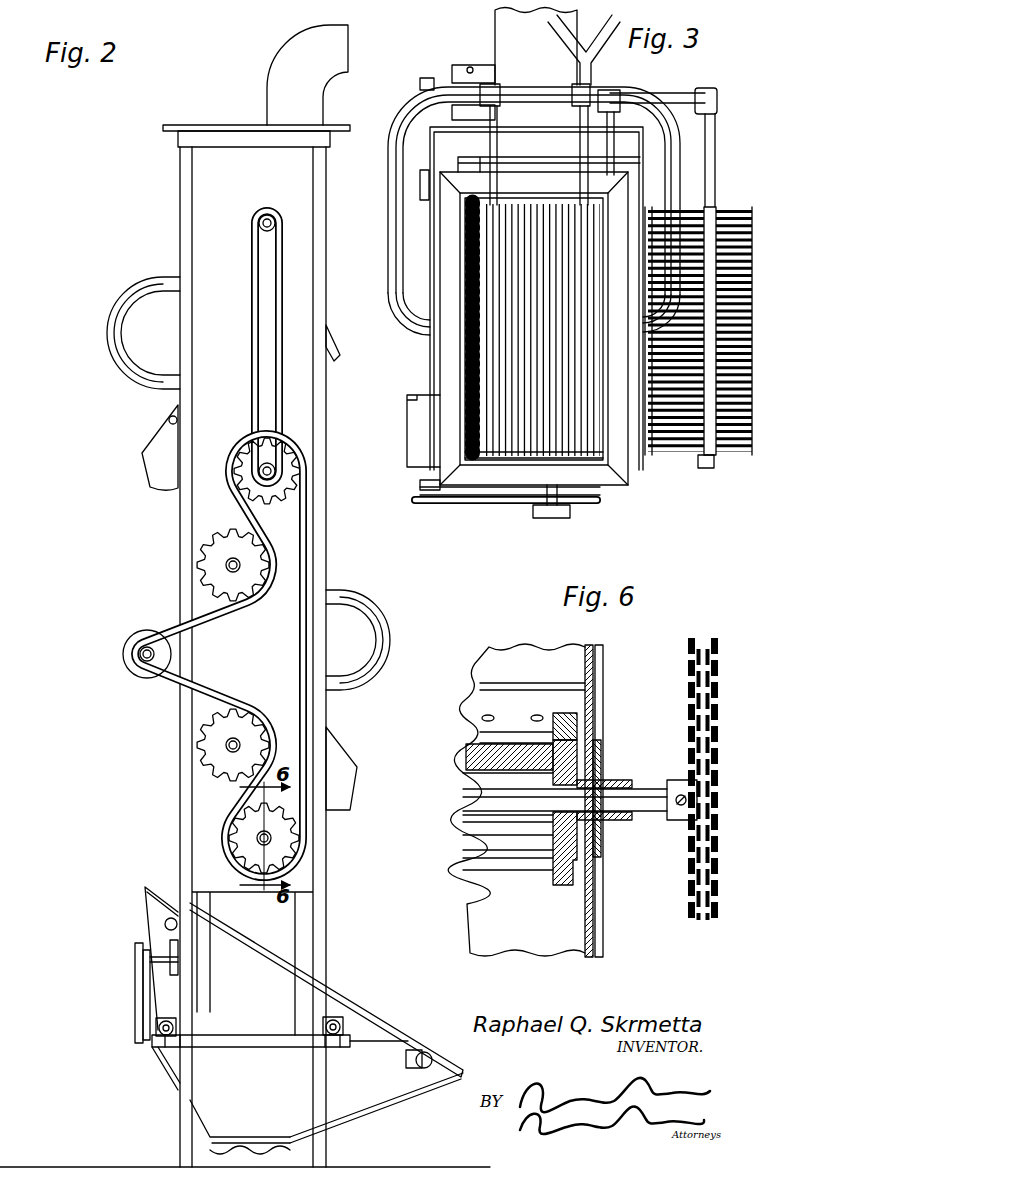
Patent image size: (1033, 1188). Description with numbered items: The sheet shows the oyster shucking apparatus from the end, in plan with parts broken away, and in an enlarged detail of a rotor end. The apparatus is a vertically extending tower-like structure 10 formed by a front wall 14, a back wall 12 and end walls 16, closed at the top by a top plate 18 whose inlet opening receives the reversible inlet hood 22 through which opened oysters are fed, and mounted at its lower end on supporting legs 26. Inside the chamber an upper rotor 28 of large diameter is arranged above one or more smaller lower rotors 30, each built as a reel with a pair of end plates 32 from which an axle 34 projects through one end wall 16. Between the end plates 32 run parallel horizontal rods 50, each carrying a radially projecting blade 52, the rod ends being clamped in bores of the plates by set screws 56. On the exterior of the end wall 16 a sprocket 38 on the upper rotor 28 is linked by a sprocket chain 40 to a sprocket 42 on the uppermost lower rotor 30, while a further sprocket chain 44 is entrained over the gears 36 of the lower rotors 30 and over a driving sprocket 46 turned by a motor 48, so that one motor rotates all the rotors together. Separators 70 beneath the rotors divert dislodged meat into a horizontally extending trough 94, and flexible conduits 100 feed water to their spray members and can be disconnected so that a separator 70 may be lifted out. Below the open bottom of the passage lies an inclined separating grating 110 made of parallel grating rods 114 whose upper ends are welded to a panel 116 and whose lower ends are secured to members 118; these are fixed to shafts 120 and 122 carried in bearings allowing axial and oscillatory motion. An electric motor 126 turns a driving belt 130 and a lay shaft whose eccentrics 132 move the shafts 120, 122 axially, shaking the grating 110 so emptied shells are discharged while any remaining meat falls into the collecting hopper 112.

In FIG. 2, the tower-like structure 10 is at (330, 178).
In FIG. 3, the back wall 12 is at (462, 355).
In FIG. 2, the front wall 14 is at (314, 503).
In FIG. 3, the front wall 14 is at (640, 141).
In FIG. 2, the end wall 16 is at (210, 189).
In FIG. 6, the end wall 16 is at (592, 951).
In FIG. 2, the top plate 18 is at (205, 125).
In FIG. 2, the inlet hood 22 is at (287, 60).
In FIG. 2, the supporting legs 26 is at (180, 1110).
In FIG. 3, the upper rotor 28 is at (548, 210).
In FIG. 6, the lower rotor 30 is at (576, 730).
In FIG. 6, the end plate 32 is at (566, 870).
In FIG. 2, the axle 34 is at (260, 223).
In FIG. 6, the axle 34 is at (641, 793).
In FIG. 2, the gear 36 is at (290, 472).
In FIG. 2, the sprocket 38 is at (275, 215).
In FIG. 2, the sprocket chain 40 is at (254, 276).
In FIG. 3, the sprocket chain 40 is at (551, 520).
In FIG. 2, the sprocket 42 is at (261, 466).
In FIG. 2, the sprocket chain 44 is at (306, 545).
In FIG. 3, the sprocket chain 44 is at (480, 506).
In FIG. 6, the sprocket chain 44 is at (700, 660).
In FIG. 2, the driving sprocket 46 is at (158, 657).
In FIG. 2, the motor 48 is at (128, 644).
In FIG. 3, the motor 48 is at (412, 415).
In FIG. 6, the rod 50 is at (478, 735).
In FIG. 6, the blade 52 is at (490, 758).
In FIG. 6, the set screw 56 is at (563, 713).
In FIG. 3, the separator 70 is at (508, 312).
In FIG. 2, the trough 94 is at (165, 440).
In FIG. 3, the trough 94 is at (440, 272).
In FIG. 2, the flexible conduit 100 is at (112, 339).
In FIG. 3, the flexible conduit 100 is at (672, 176).
In FIG. 2, the separating grating 110 is at (358, 1000).
In FIG. 3, the separating grating 110 is at (725, 460).
In FIG. 2, the collecting hopper 112 is at (390, 1088).
In FIG. 2, the grating rod 114 is at (246, 946).
In FIG. 3, the grating rod 114 is at (681, 428).
In FIG. 2, the panel 116 is at (148, 920).
In FIG. 2, the member 118 is at (280, 1043).
In FIG. 2, the shaft 120 is at (164, 1048).
In FIG. 3, the shaft 120 is at (424, 480).
In FIG. 2, the shaft 122 is at (334, 1048).
In FIG. 3, the electric motor 126 is at (480, 70).
In FIG. 2, the driving belt 130 is at (137, 991).
In FIG. 2, the eccentric 132 is at (172, 1021).